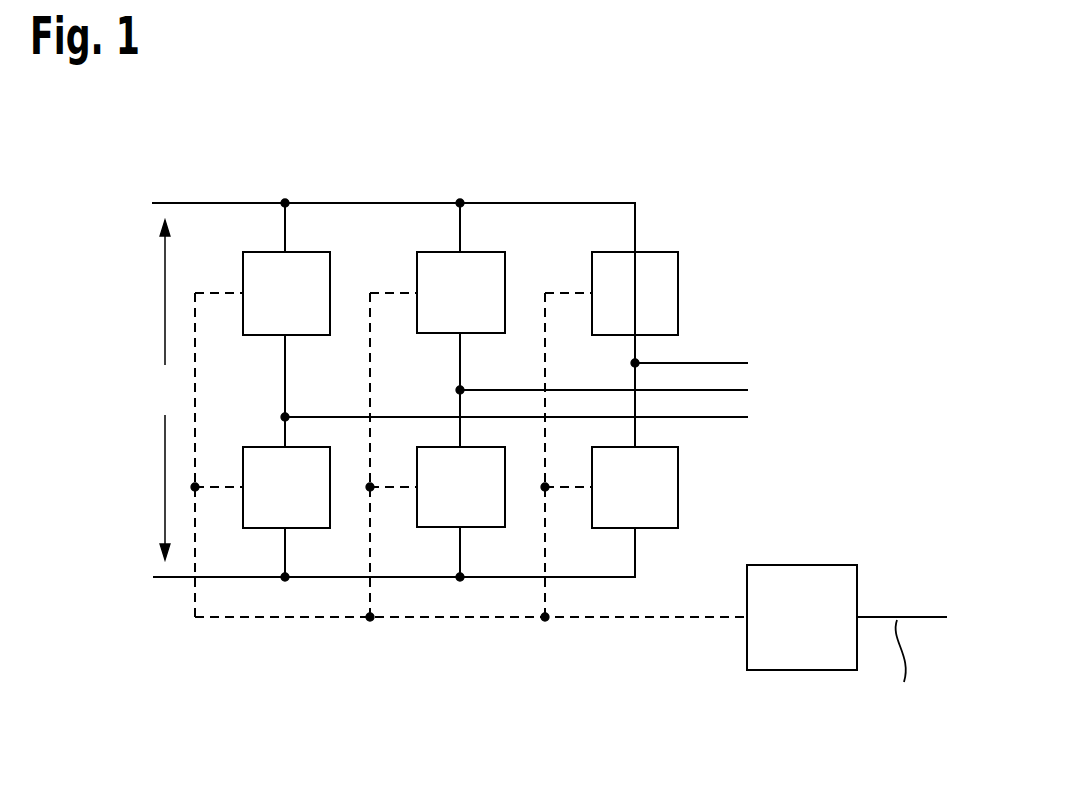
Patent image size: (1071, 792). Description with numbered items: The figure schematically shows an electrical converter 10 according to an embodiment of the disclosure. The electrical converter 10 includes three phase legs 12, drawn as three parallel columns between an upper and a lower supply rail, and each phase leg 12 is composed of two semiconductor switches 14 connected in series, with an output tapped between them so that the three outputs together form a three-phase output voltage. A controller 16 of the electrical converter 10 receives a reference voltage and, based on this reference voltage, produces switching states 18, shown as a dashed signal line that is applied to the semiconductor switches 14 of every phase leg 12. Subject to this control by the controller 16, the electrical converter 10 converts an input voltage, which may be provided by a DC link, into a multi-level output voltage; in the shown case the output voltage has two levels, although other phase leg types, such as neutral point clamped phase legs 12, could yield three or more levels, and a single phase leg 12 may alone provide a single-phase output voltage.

The electrical converter 10 is at (156, 182).
The phase leg 12 is at (313, 166).
The semiconductor switch 14 is at (262, 252).
The controller 16 is at (803, 565).
The switching states 18 is at (663, 625).